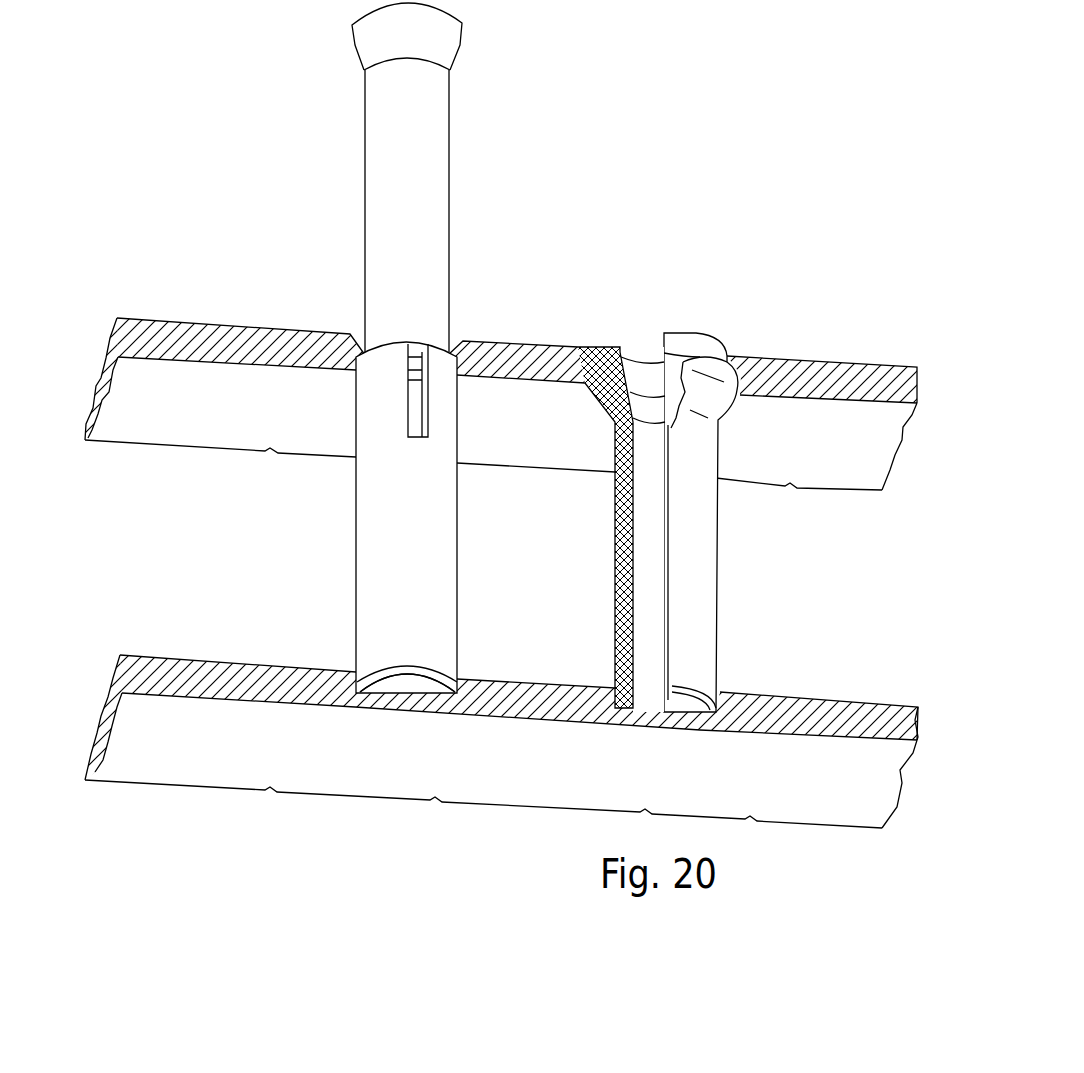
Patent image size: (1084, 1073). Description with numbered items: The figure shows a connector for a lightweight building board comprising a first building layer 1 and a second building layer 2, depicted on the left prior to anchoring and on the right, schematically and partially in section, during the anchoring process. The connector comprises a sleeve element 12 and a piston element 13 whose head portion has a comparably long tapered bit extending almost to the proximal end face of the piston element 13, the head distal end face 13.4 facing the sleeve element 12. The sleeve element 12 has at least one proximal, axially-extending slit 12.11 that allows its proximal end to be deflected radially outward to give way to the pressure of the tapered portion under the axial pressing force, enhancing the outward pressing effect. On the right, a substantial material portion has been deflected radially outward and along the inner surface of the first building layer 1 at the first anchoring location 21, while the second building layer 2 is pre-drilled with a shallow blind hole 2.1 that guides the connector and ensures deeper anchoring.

The first building layer 1 is at (848, 365).
The second building layer 2 is at (860, 700).
The blind hole 2.1 is at (415, 688).
The sleeve element 12 is at (457, 557).
The slit 12.11 is at (418, 407).
The piston element 13 is at (450, 197).
The head distal end face 13.4 is at (450, 43).
The first anchoring location 21 is at (594, 337).